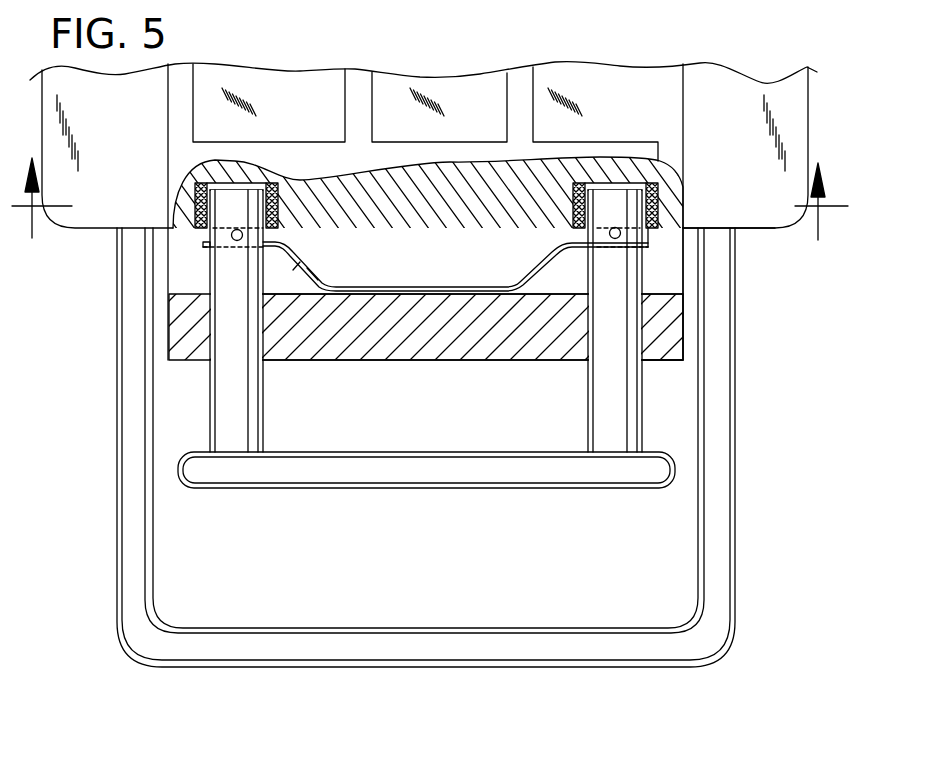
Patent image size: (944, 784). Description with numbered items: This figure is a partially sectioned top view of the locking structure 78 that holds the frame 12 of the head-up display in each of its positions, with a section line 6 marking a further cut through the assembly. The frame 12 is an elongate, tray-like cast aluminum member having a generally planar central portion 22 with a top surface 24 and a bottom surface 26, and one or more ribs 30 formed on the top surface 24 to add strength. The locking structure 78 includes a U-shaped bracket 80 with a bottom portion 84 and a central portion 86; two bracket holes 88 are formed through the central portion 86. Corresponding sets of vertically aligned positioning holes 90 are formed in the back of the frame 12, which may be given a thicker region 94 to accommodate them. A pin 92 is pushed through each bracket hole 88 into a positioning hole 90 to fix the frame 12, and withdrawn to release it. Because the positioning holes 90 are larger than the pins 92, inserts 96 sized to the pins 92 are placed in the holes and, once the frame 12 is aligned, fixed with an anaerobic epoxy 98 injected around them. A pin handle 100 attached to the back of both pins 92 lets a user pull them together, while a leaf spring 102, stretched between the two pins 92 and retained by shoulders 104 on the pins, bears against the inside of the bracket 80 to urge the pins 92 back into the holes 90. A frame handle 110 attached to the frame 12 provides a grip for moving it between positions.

The section line of FIG. 6 is at (428, 199).
The frame 12 is at (809, 111).
The central portion 22 is at (556, 86).
The top surface 24 is at (627, 113).
The bottom surface 26 is at (800, 213).
The ribs 30 is at (360, 72).
The locking structure 78 is at (665, 360).
The U-shaped bracket 80 is at (683, 318).
The bottom portion 84 is at (678, 270).
The central portion 86 is at (668, 337).
The bracket hole 88 is at (262, 328).
The positioning holes 90 is at (207, 230).
The pin 92 is at (252, 396).
The thicker region 94 is at (311, 158).
The inserts 96 is at (201, 183).
The epoxy 98 is at (194, 210).
The pin handle 100 is at (423, 488).
The leaf spring 102 is at (430, 287).
The shoulders 104 is at (243, 236).
The frame handle 110 is at (510, 640).